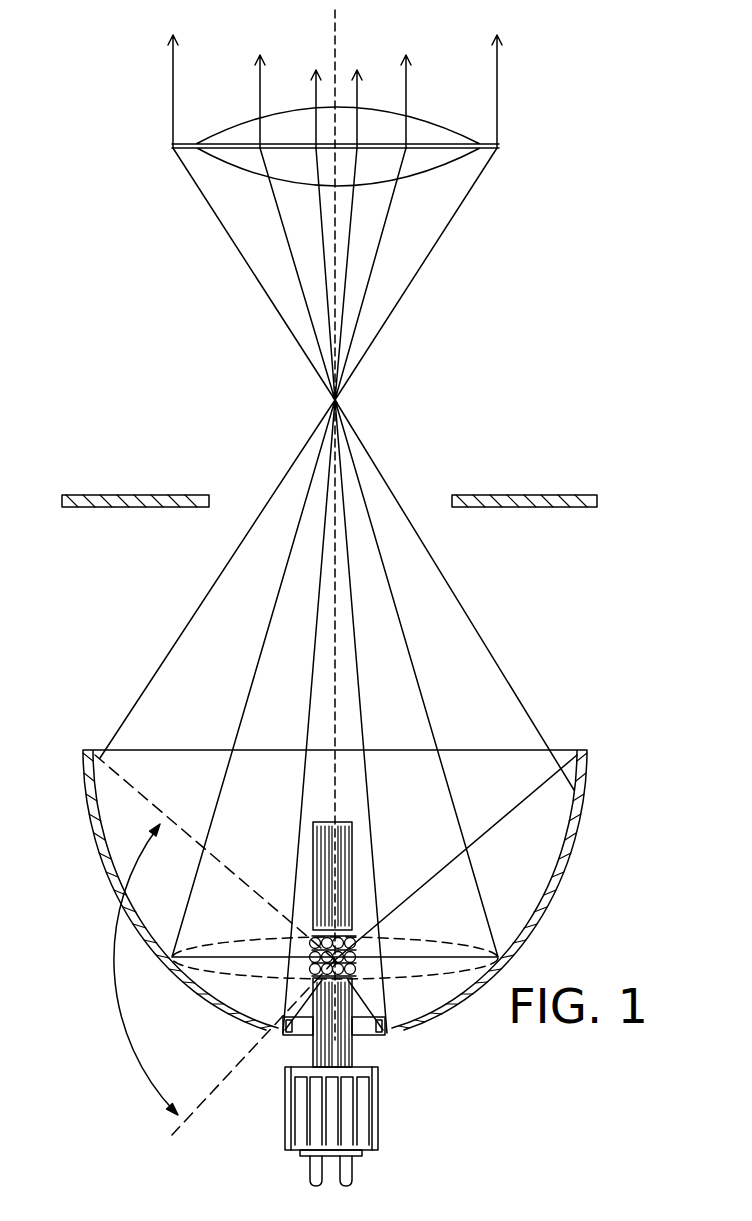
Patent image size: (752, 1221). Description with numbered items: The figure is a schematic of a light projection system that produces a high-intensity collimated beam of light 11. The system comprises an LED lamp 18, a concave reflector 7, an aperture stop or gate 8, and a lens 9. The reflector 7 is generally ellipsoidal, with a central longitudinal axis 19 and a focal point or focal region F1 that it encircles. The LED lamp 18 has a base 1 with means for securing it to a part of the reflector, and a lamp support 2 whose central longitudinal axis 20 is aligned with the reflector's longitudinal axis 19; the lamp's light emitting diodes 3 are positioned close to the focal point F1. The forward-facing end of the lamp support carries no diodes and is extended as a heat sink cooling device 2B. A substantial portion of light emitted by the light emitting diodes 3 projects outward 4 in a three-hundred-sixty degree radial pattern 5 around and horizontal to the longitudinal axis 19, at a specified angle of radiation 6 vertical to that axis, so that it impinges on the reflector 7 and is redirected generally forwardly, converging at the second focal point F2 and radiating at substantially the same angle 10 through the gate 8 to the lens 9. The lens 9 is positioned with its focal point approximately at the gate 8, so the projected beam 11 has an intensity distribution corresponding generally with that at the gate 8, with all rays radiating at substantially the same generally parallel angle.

The base 1 is at (317, 1128).
The lamp support 2 is at (348, 1051).
The heat sink cooling device 2B is at (338, 822).
The light emitting diodes 3 is at (355, 958).
The outward projection of light 4 is at (292, 1033).
The 360 degree radial pattern 5 is at (243, 938).
The specified angle of radiation 6 is at (215, 945).
The concave reflector 7 is at (98, 852).
The aperture stop or gate 8 is at (183, 503).
The lens 9 is at (312, 187).
The angle of radiation from second focal point 10 is at (250, 270).
The collimated beam of light 11 is at (497, 90).
The LED lamp 18 is at (330, 1077).
The central longitudinal axis 19 is at (335, 685).
The central longitudinal axis of lamp support 20 is at (332, 917).
The first focal point F1 is at (315, 962).
The second focal point F2 is at (333, 402).